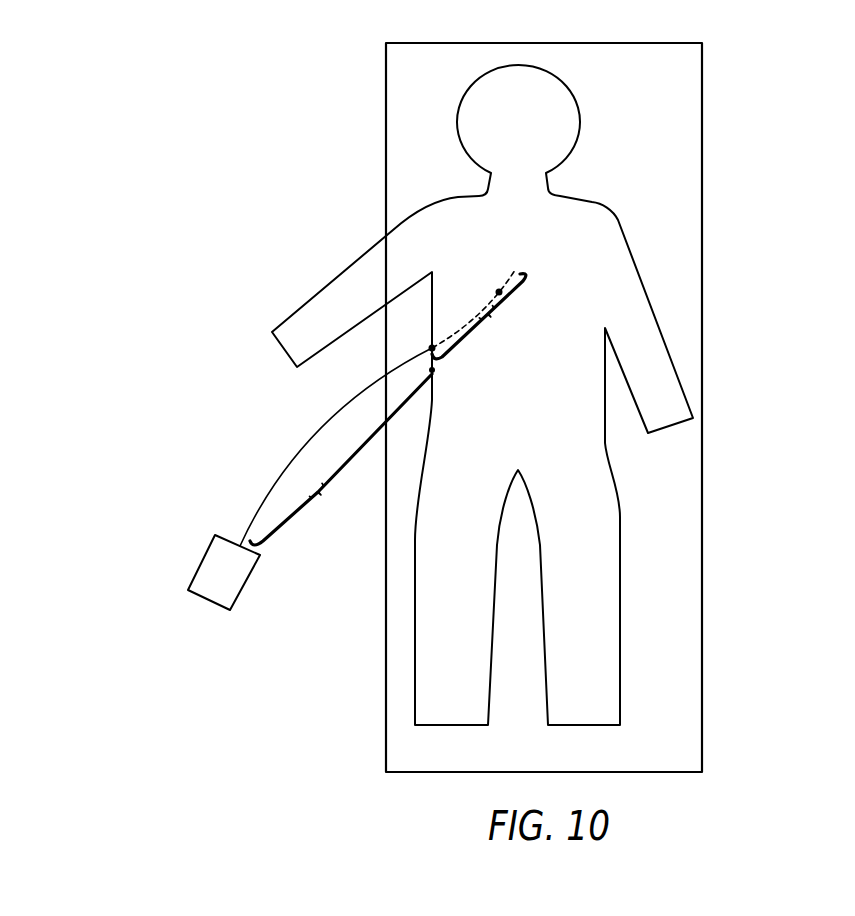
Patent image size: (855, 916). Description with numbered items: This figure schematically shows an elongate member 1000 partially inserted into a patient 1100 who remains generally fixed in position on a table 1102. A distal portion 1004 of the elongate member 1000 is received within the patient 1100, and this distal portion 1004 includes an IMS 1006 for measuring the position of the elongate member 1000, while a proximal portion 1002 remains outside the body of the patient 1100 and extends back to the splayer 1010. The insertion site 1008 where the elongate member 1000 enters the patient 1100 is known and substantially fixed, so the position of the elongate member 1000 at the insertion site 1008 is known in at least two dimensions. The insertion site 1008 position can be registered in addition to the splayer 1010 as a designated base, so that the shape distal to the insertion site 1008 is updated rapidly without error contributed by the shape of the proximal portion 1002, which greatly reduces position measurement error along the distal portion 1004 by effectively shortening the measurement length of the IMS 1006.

The elongate member 1000 is at (284, 438).
The proximal portion 1002 is at (342, 456).
The distal portion 1004 is at (488, 316).
The IMS 1006 is at (499, 292).
The insertion site 1008 is at (432, 348).
The splayer 1010 is at (193, 571).
The patient 1100 is at (593, 227).
The table 1102 is at (682, 85).